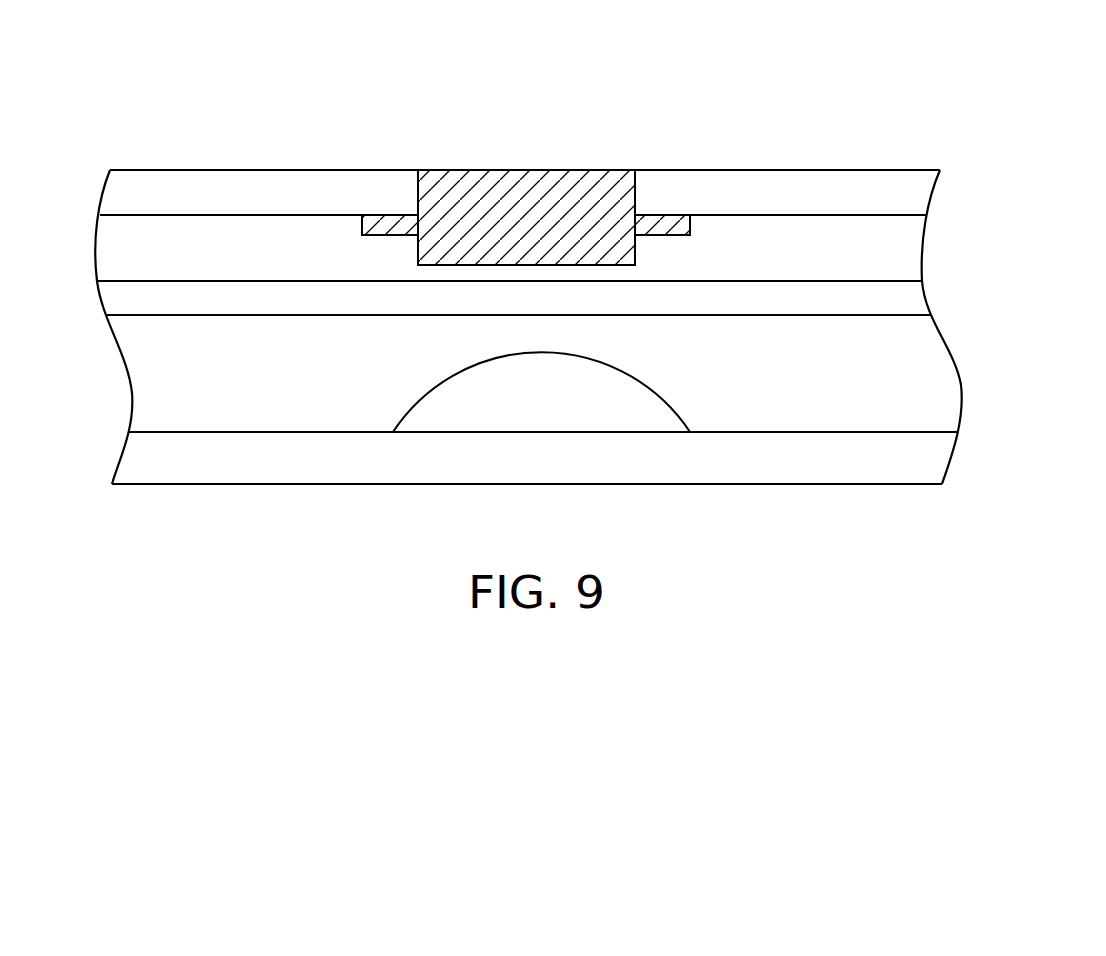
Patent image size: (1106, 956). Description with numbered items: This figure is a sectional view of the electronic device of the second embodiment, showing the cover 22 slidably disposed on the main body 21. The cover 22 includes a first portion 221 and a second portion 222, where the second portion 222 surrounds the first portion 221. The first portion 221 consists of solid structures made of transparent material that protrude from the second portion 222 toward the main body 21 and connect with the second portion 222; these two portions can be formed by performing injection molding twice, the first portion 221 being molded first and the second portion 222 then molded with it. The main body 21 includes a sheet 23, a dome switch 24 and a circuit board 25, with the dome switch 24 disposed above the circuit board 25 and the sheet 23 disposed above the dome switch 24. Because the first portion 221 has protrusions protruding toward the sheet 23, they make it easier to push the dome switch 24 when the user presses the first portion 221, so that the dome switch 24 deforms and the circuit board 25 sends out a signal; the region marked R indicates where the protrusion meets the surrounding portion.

The main body 21 is at (1046, 287).
The cover 22 is at (672, 148).
The first portion 221 is at (541, 215).
The second portion 222 is at (781, 159).
The sheet 23 is at (912, 297).
The dome switch 24 is at (595, 382).
The circuit board 25 is at (912, 460).
The recess region R is at (418, 252).